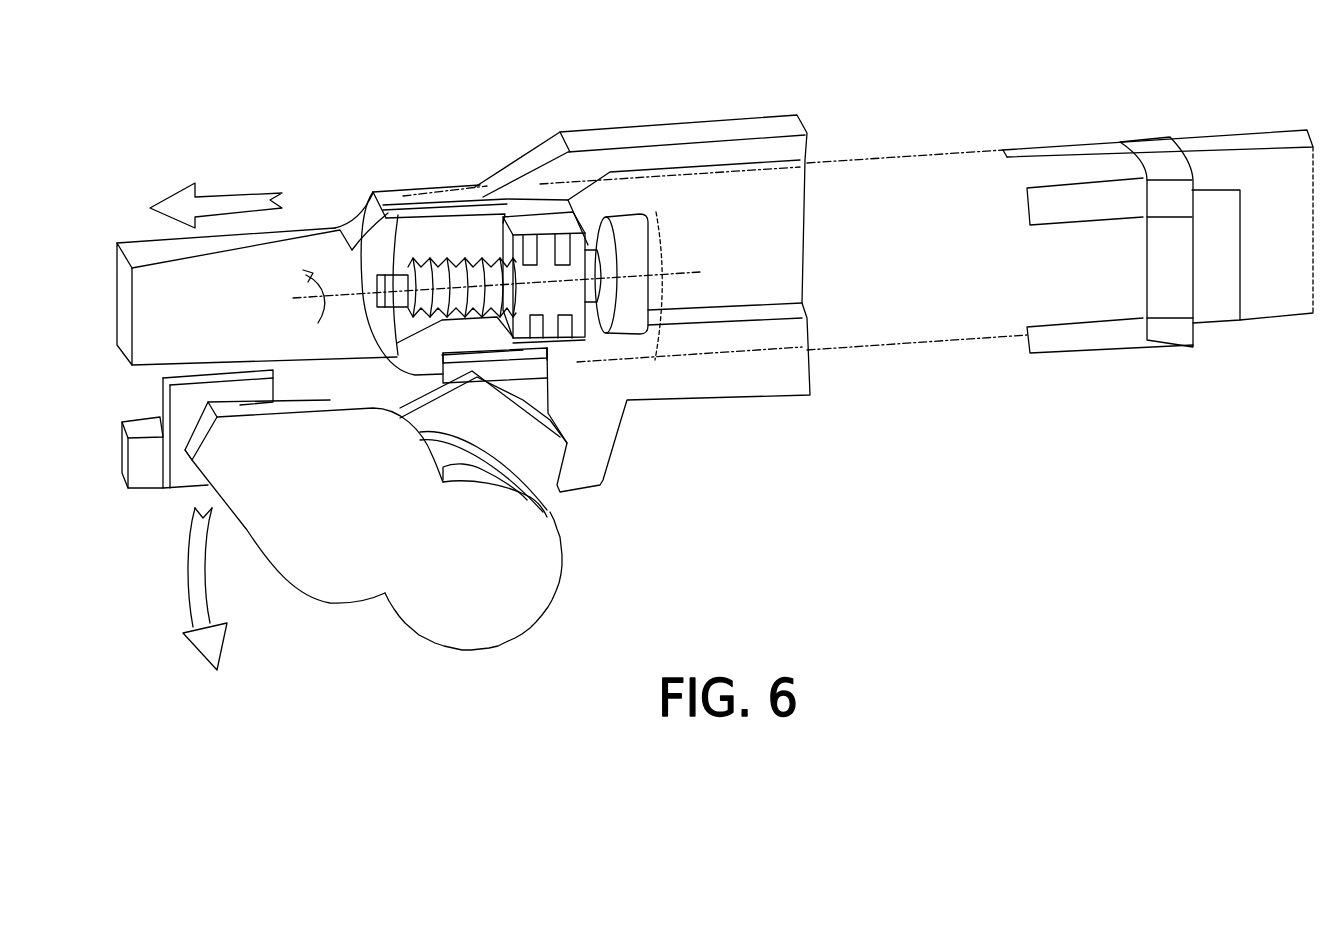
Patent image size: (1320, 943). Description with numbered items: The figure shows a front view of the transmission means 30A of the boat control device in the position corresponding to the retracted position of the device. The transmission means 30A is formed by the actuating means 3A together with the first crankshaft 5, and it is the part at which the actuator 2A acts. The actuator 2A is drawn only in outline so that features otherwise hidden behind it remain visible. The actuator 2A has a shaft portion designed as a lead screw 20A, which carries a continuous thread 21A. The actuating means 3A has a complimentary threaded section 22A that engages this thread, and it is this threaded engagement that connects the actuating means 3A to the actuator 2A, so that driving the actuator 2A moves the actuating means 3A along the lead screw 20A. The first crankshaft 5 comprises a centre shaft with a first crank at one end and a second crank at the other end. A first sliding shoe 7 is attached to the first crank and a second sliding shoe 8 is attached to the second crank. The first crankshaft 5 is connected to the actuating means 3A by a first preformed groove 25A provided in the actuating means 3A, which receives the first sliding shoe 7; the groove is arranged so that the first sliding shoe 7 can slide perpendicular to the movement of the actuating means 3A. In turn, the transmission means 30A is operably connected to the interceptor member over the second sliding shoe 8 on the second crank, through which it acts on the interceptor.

The actuator 2A is at (940, 153).
The actuating means 3A is at (675, 137).
The first crankshaft 5 is at (335, 540).
The first sliding shoe 7 is at (533, 388).
The second sliding shoe 8 is at (188, 403).
The lead screw 20A is at (443, 262).
The continuous thread 21A is at (427, 240).
The complimentary threaded section 22A is at (540, 277).
The first preformed groove 25A is at (532, 372).
The transmission means 30A is at (742, 498).